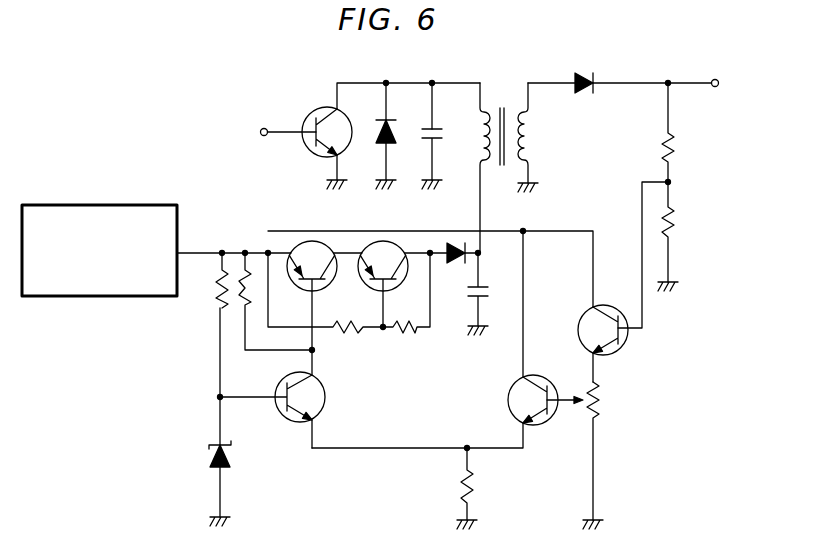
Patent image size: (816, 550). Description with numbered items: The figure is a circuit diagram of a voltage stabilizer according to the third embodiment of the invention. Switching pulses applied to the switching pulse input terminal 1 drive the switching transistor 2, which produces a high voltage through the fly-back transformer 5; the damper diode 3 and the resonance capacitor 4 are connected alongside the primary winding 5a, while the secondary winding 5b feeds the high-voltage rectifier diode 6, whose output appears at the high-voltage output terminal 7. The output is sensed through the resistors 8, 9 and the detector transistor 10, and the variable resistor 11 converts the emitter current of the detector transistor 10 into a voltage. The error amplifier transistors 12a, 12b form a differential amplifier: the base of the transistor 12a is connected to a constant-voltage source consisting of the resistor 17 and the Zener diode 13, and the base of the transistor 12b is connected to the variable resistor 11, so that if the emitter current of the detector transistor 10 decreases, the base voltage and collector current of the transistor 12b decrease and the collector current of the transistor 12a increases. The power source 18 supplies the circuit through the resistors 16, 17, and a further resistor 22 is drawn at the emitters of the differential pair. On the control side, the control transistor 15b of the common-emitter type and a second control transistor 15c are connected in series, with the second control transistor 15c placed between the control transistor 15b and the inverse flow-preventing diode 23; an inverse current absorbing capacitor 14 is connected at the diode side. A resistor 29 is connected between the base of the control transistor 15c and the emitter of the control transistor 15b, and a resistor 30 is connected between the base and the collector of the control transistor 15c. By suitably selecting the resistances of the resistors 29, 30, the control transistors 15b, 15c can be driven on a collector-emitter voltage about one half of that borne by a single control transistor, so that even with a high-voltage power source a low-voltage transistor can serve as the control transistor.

The switching pulse input terminal 1 is at (262, 128).
The switching transistor 2 is at (319, 110).
The damper diode 3 is at (380, 128).
The resonance capacitor 4 is at (424, 131).
The fly-back transformer 5 is at (510, 160).
The primary winding 5a is at (484, 137).
The secondary winding 5b is at (526, 136).
The high-voltage rectifier diode 6 is at (583, 80).
The high-voltage output terminal 7 is at (718, 81).
The resistor 8 is at (676, 151).
The resistor 9 is at (676, 221).
The detector transistor 10 is at (614, 350).
The variable resistor 11 is at (603, 399).
The error amplifier transistor 12a is at (327, 397).
The error amplifier transistor 12b is at (508, 399).
The Zener diode 13 is at (210, 459).
The inverse current absorbing capacitor 14 is at (468, 292).
The control transistor 15b is at (293, 283).
The second control transistor 15c is at (360, 283).
The resistor 16 is at (241, 302).
The resistor 17 is at (215, 284).
The power source 18 is at (122, 205).
The resistor 22 is at (460, 486).
The inverse flow-preventing diode 23 is at (455, 243).
The resistor 29 is at (351, 334).
The resistor 30 is at (398, 334).